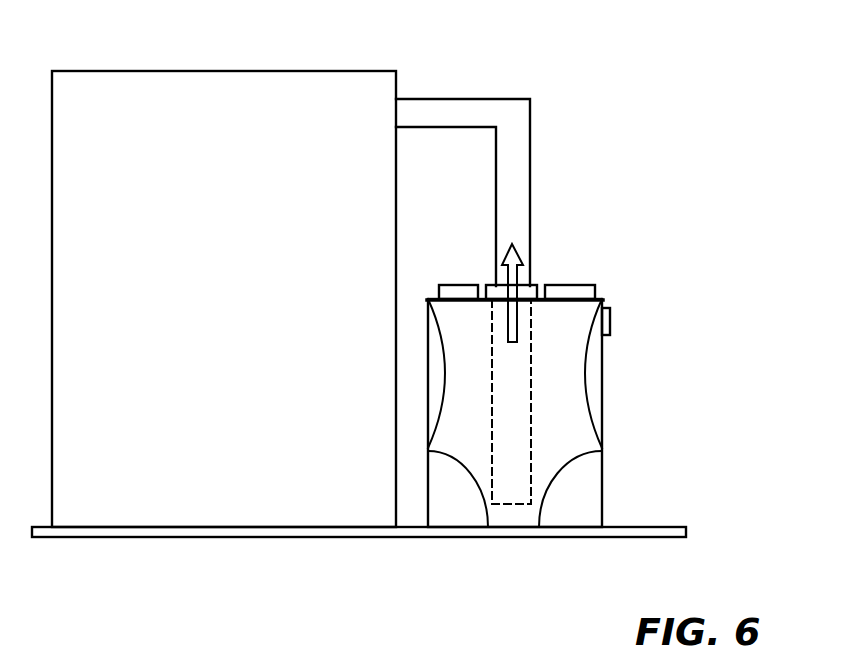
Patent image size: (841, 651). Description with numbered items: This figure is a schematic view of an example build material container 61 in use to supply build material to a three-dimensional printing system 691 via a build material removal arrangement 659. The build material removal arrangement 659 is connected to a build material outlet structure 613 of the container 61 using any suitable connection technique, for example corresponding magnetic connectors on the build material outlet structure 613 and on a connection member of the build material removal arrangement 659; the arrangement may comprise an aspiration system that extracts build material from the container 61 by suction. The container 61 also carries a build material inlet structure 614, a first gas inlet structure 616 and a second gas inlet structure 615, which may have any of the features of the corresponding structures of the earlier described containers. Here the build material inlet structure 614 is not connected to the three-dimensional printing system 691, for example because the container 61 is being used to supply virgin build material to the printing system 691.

The 3D printing system 691 is at (128, 70).
The build material removal arrangement 659 is at (495, 60).
The container 61 is at (580, 354).
The build material outlet structure 613 is at (493, 286).
The build material inlet structure 614 is at (597, 287).
The second gas inlet structure 615 is at (610, 321).
The first gas inlet structure 616 is at (457, 285).